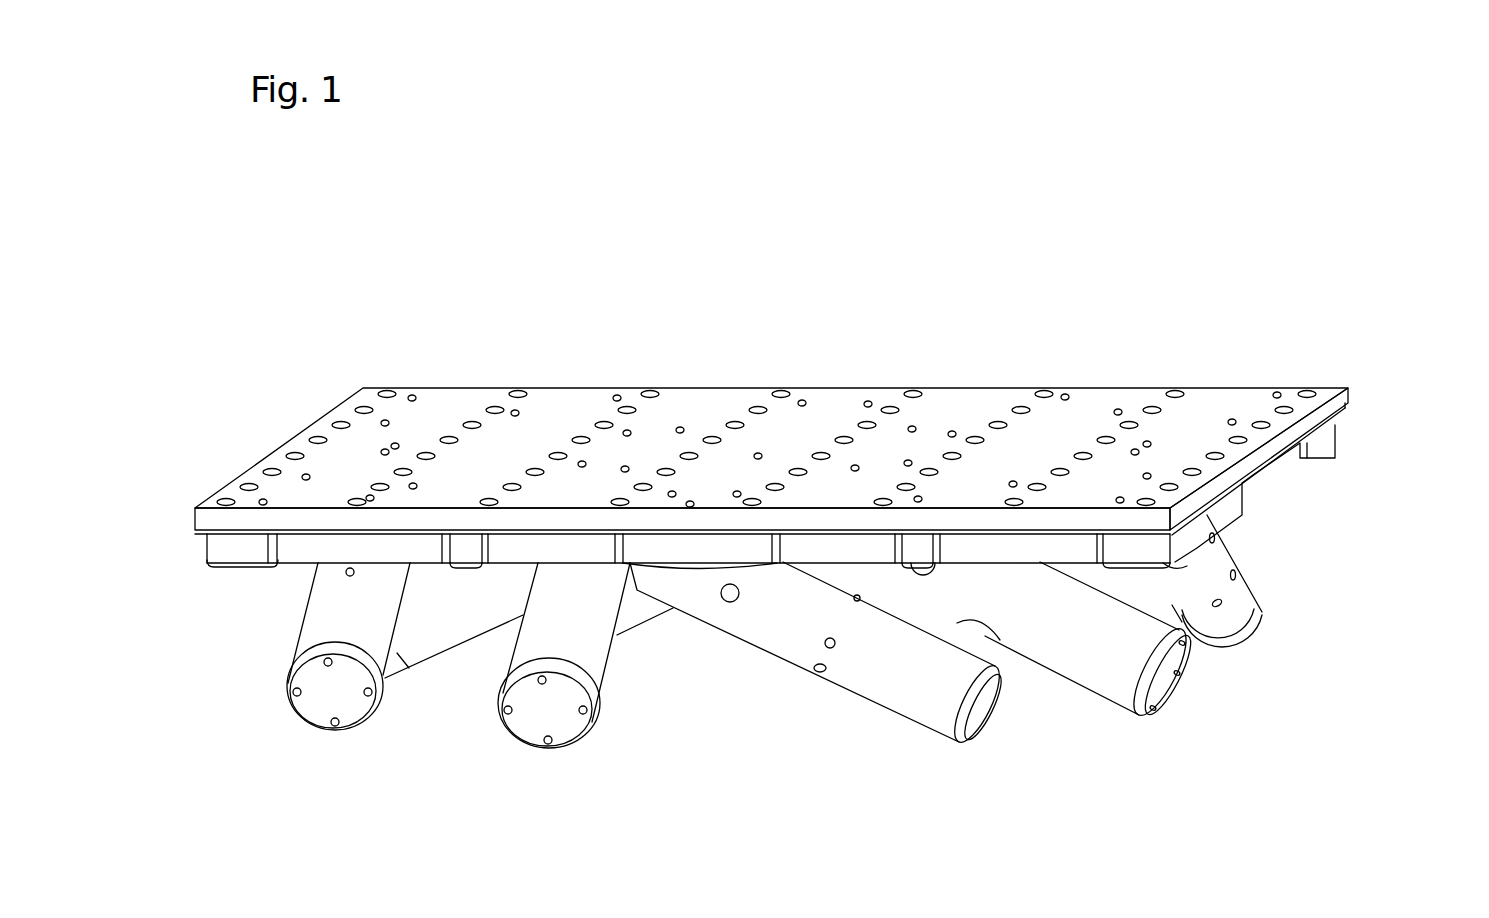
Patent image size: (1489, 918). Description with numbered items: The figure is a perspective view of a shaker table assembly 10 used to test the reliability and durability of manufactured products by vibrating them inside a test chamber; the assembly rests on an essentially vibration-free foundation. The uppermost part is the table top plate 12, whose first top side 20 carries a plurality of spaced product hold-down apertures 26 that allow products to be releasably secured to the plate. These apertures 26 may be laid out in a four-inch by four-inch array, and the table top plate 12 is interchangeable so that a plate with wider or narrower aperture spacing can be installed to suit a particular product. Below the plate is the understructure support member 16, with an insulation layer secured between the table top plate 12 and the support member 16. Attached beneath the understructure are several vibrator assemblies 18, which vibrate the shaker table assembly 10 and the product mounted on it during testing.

The shaker table assembly 10 is at (838, 462).
The table top plate 12 is at (838, 396).
The first top side 20 is at (771, 383).
The product hold-down apertures 26 is at (766, 382).
The vibrator assembly 18 is at (743, 664).
The understructure support member 16 is at (1248, 653).